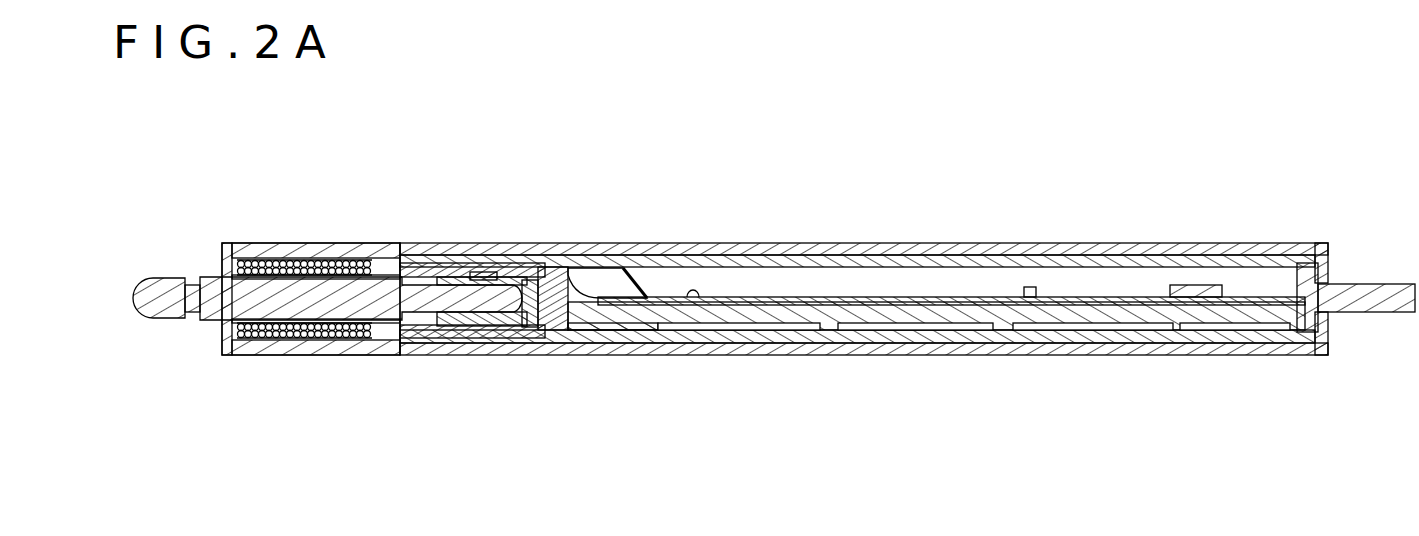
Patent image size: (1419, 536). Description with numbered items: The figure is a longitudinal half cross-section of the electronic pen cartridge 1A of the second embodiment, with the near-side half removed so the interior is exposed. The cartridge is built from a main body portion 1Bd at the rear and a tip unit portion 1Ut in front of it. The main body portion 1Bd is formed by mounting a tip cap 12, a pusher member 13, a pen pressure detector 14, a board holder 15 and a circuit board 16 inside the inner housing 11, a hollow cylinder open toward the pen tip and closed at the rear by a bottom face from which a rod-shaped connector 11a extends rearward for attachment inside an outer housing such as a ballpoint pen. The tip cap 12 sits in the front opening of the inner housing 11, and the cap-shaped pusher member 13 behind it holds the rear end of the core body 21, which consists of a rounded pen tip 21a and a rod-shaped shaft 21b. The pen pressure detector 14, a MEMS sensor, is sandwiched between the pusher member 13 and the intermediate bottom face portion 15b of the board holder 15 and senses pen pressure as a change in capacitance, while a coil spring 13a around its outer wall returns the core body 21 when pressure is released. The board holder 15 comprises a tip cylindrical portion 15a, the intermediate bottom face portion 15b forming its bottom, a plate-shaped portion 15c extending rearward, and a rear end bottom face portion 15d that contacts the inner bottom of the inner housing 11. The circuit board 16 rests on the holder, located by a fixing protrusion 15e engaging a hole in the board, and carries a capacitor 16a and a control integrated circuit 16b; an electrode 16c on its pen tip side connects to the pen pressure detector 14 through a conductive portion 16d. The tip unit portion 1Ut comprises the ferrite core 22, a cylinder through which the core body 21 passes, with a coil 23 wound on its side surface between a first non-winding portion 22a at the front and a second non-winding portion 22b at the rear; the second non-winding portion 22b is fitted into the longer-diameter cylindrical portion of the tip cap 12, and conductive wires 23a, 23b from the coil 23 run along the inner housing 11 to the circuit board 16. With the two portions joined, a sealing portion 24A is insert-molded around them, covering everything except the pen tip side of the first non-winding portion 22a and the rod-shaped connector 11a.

The electronic pen cartridge 1A is at (705, 190).
The tip unit portion 1Ut is at (357, 402).
The main body portion 1Bd is at (860, 390).
The inner housing 11 is at (745, 248).
The rod-shaped connector 11a is at (1355, 288).
The tip cap 12 is at (418, 268).
The pusher member 13 is at (510, 278).
The coil spring 13a is at (474, 276).
The pen pressure detector 14 is at (532, 328).
The board holder 15 is at (678, 328).
The tip cylindrical portion 15a is at (468, 332).
The intermediate bottom face portion 15b is at (566, 331).
The plate-shaped portion 15c is at (921, 313).
The rear end bottom face portion 15d is at (1303, 303).
The fixing protrusion 15e is at (696, 300).
The circuit board 16 is at (803, 303).
The capacitor 16a is at (1030, 289).
The control integrated circuit 16b is at (1185, 287).
The electrode 16c is at (544, 268).
The conductive portion 16d is at (588, 268).
The core body 21 is at (292, 405).
The pen tip 21a is at (160, 310).
The shaft 21b is at (248, 316).
The ferrite core 22 is at (320, 345).
The first non-winding portion 22a is at (227, 277).
The second non-winding portion 22b is at (388, 345).
The coil 23 is at (316, 262).
The conductive wire 23a is at (392, 262).
The conductive wire 23b is at (304, 330).
The sealing portion 24A is at (850, 250).